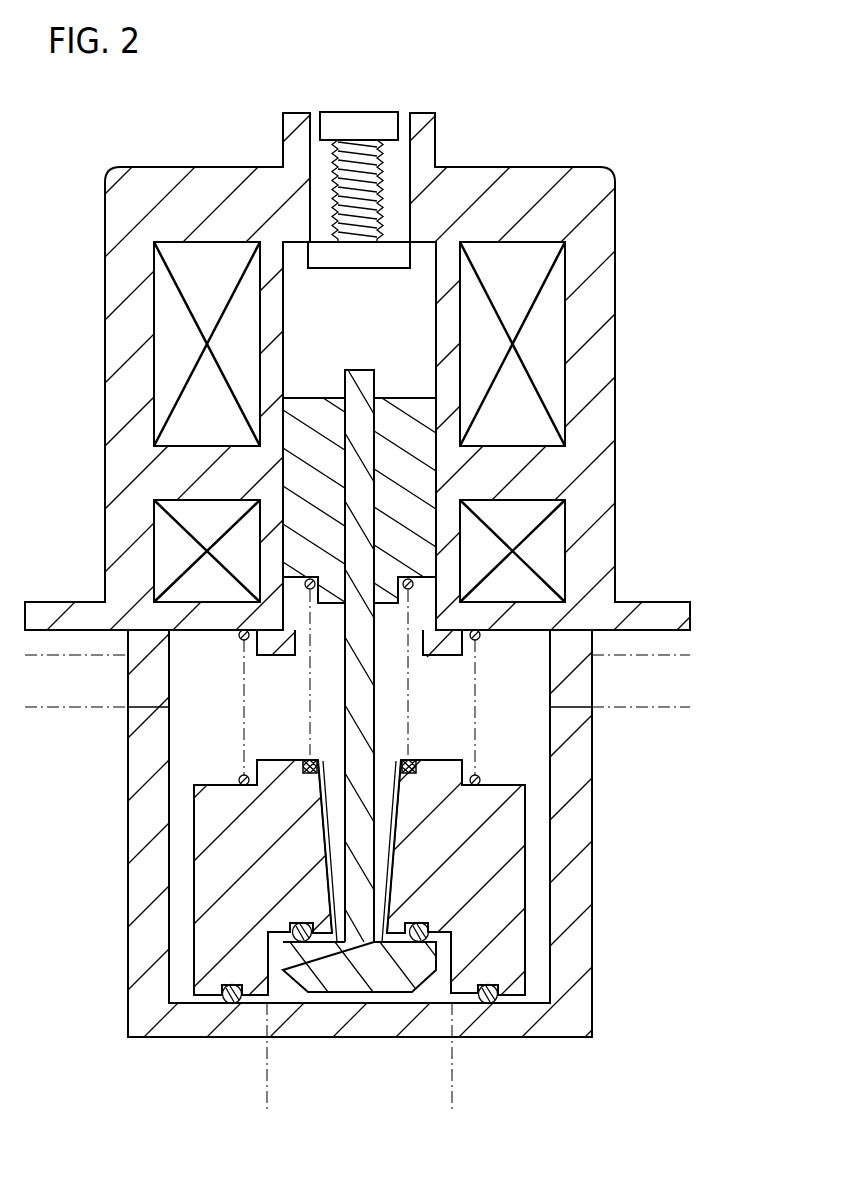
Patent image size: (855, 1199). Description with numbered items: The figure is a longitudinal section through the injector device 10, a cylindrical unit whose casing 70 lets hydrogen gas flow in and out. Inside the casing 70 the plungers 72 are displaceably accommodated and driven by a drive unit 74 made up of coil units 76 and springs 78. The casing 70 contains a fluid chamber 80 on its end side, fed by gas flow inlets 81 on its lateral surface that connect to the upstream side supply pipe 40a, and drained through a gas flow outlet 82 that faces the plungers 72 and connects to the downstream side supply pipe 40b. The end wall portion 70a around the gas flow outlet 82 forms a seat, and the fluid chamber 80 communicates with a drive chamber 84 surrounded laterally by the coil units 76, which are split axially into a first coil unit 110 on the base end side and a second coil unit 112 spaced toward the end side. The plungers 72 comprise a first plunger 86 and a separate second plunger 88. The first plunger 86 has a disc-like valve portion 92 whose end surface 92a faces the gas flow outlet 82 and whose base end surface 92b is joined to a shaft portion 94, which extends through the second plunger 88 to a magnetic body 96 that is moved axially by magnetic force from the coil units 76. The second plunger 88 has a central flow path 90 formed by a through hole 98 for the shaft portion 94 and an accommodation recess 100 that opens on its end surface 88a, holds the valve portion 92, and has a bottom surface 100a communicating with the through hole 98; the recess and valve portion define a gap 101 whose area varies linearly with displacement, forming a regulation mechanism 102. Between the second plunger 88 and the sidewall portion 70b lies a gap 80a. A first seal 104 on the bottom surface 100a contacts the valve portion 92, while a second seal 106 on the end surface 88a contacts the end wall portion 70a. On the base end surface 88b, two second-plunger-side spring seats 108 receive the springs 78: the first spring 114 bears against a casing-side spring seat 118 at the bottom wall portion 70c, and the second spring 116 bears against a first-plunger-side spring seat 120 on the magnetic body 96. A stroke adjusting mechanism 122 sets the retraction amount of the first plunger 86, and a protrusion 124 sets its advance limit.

The injector device 10 is at (354, 59).
The stroke adjusting mechanism 122 is at (370, 112).
The casing 70 is at (148, 160).
The end wall portion 70a is at (186, 1025).
The sidewall portion 70b is at (126, 822).
The bottom wall portion 70c is at (208, 617).
The drive unit 74 is at (144, 257).
The coil units 76 is at (297, 470).
The first coil unit 110 is at (168, 328).
The second coil unit 112 is at (168, 520).
The drive chamber 84 is at (313, 316).
The shaft portion 94 is at (358, 369).
The magnetic body 96 is at (410, 405).
The protrusion 124 is at (293, 632).
The first-plunger-side spring seat 120 is at (427, 590).
The gas flow inlets 81 is at (578, 640).
The casing-side spring seat 118 is at (522, 617).
The upstream side supply pipe 40a is at (78, 708).
The downstream side supply pipe 40b is at (452, 1102).
The through hole 98 is at (328, 783).
The accommodation recess 100 is at (277, 968).
The flow path 90 is at (256, 846).
The second spring 116 is at (410, 672).
The first spring 114 is at (477, 692).
The springs 78 is at (466, 682).
The second-plunger-side spring seats 108 is at (229, 782).
The fluid chamber 80 is at (533, 760).
The gap 80a is at (535, 897).
The end surface 88a is at (517, 1003).
The base end surface 88b is at (508, 776).
The gap 101 is at (382, 863).
The base end surface 92b is at (392, 900).
The bottom surface 100a is at (427, 925).
The valve portion 92 is at (435, 950).
The end surface 92a is at (343, 993).
The first seal 104 is at (298, 922).
The second seal 106 is at (235, 983).
The regulation mechanism 102 is at (465, 1000).
The gas flow outlet 82 is at (298, 1015).
The first plunger 86 is at (380, 992).
The second plunger 88 is at (436, 996).
The plungers 72 is at (441, 1070).